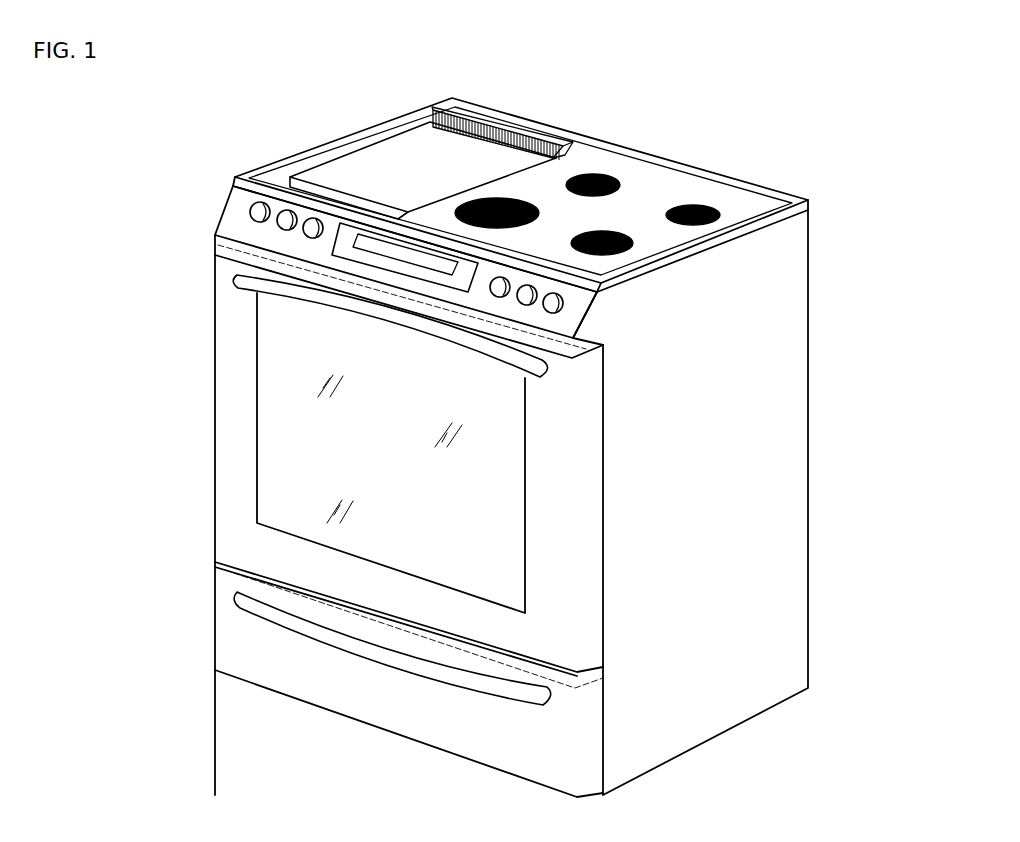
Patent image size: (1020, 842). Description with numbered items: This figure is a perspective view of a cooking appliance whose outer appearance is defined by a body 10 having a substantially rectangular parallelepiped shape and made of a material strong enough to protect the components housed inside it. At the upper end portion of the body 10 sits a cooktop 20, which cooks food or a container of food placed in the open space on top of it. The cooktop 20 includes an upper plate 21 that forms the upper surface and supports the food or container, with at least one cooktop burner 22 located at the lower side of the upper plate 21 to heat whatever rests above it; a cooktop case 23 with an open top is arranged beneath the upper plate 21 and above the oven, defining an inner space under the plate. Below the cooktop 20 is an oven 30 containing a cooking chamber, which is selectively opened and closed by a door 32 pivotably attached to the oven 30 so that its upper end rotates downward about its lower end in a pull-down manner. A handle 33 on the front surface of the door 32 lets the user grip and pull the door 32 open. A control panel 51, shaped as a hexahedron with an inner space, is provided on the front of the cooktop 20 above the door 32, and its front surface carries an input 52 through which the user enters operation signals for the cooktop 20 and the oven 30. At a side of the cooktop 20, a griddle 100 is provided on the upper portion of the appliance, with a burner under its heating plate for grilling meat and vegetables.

The body 10 is at (811, 352).
The cooktop 20 is at (738, 174).
The upper plate 21 is at (639, 197).
The cooktop burner 22 is at (528, 201).
The cooktop case 23 is at (799, 236).
The oven 30 is at (213, 395).
The door 32 is at (232, 448).
The handle 33 is at (243, 289).
The control panel 51 is at (226, 197).
The input unit 52 is at (314, 229).
The griddle 100 is at (398, 148).